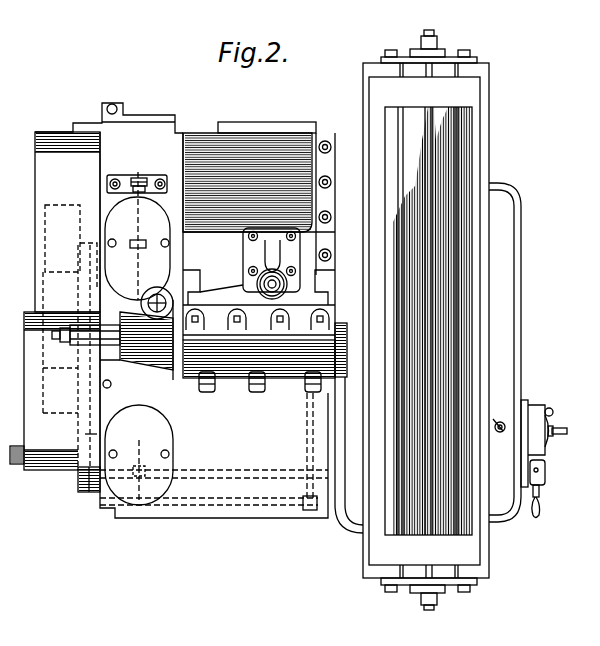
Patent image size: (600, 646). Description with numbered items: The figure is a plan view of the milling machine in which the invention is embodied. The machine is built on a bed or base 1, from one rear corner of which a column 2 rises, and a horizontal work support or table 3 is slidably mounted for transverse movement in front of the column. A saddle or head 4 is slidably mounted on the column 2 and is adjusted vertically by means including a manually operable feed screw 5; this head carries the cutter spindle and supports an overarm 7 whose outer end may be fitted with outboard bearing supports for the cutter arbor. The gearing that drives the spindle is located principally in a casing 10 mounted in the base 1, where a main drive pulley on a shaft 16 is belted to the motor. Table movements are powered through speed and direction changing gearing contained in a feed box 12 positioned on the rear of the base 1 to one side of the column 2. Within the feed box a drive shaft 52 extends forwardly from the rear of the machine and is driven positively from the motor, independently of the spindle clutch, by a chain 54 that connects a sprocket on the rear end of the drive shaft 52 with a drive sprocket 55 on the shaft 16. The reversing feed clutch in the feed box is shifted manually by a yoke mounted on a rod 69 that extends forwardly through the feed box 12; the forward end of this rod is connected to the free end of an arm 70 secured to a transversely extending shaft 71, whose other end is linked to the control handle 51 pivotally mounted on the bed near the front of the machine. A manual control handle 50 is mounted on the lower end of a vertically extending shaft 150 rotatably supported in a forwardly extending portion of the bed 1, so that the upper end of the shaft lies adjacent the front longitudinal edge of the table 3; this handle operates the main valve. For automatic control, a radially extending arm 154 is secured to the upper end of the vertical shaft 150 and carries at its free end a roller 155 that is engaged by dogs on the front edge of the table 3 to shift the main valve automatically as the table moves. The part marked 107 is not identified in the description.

The bed or base 1 is at (356, 132).
The column 2 is at (232, 232).
The work support or table 3 is at (128, 162).
The saddle or head 4 is at (228, 312).
The feed screw 5 is at (273, 250).
The overarm 7 is at (340, 325).
The casing 10 is at (116, 180).
The feed box 12 is at (222, 518).
The shaft 16 is at (45, 268).
The manual control handle 50 is at (28, 330).
The control handle 51 is at (6, 418).
The drive shaft 52 is at (210, 476).
The chain 54 is at (85, 434).
The drive sprocket 55 is at (95, 250).
The rod 69 is at (247, 503).
The arm 70 is at (307, 522).
The transversely extending shaft 71 is at (308, 434).
The pull chain 107 is at (540, 508).
The vertically extending shaft 150 is at (499, 440).
The radially extending arm 154 is at (506, 425).
The roller 155 is at (500, 420).